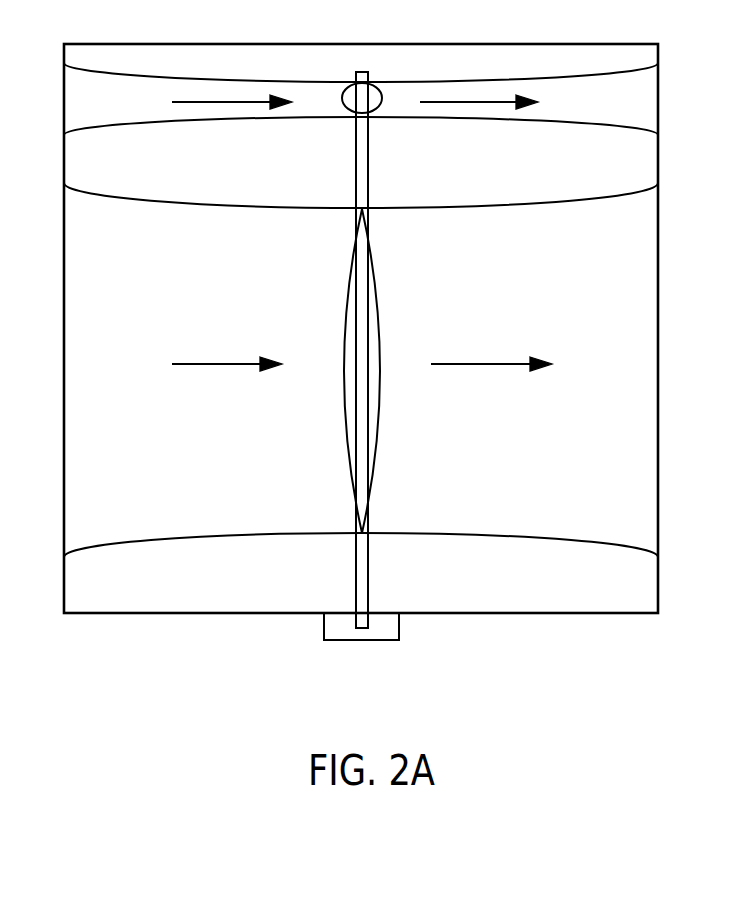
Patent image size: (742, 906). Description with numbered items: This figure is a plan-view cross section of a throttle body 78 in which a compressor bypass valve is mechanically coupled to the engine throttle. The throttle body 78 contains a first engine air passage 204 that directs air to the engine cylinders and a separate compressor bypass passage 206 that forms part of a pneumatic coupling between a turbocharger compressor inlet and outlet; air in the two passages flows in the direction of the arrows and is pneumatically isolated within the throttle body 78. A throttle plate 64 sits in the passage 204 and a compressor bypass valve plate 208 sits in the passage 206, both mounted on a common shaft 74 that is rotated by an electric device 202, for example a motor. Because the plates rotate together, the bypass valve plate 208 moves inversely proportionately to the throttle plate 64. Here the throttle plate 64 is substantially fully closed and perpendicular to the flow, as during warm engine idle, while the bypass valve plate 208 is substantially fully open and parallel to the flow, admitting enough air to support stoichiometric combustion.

The throttle body 78 is at (134, 613).
The shaft 74 is at (369, 172).
The throttle plate 64 is at (380, 332).
The electric device 202 is at (399, 640).
The first engine air passage 204 is at (282, 462).
The compressor bypass passage 206 is at (120, 102).
The compressor bypass valve plate 208 is at (352, 110).